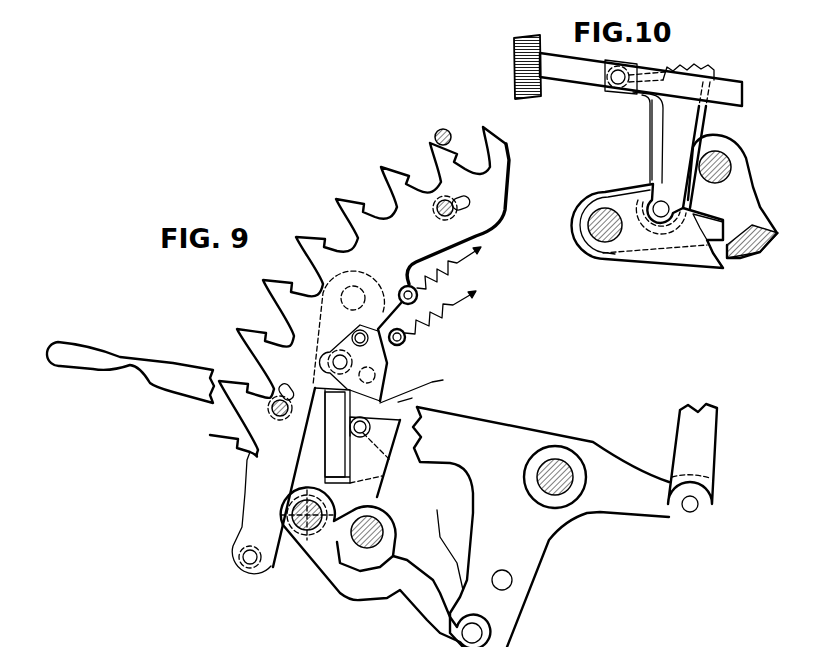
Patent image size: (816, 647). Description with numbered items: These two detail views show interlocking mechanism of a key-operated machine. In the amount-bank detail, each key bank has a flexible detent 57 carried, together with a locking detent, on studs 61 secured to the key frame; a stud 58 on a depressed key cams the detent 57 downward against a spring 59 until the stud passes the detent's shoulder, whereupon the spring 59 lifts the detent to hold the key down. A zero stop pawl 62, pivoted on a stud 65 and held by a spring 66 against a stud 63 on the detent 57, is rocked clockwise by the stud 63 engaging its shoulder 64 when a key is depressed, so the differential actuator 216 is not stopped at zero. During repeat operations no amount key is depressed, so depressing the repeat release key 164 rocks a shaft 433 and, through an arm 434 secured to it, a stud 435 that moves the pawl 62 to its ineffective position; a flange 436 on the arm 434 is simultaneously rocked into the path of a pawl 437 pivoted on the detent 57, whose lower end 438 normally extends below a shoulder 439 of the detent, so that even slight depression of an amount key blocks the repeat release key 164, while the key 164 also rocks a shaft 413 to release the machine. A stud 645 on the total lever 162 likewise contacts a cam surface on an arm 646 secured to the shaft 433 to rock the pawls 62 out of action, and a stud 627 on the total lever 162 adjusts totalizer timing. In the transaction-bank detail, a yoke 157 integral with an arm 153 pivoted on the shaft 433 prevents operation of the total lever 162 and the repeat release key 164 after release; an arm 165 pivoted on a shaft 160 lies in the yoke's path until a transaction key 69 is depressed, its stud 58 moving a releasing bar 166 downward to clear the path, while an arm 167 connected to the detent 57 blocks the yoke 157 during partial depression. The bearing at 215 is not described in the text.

In FIG. 9, the flexible detent 57 is at (352, 207).
In FIG. 10, the flexible detent 57 is at (657, 120).
In FIG. 10, the stud 58 is at (606, 93).
In FIG. 9, the spring 59 is at (458, 265).
In FIG. 9, the stud 61 is at (434, 214).
In FIG. 9, the zero stop pawl 62 is at (330, 447).
In FIG. 9, the stud 63 is at (377, 378).
In FIG. 9, the shoulder 64 is at (347, 396).
In FIG. 9, the stud 65 is at (355, 286).
In FIG. 9, the spring 66 is at (454, 307).
In FIG. 10, the transaction key 69 is at (520, 60).
In FIG. 10, the arm 153 is at (747, 216).
In FIG. 10, the yoke 157 is at (731, 256).
In FIG. 10, the shaft 160 is at (607, 210).
In FIG. 9, the total lever 162 is at (466, 421).
In FIG. 9, the repeat release key 164 is at (146, 638).
In FIG. 10, the arm 165 is at (710, 262).
In FIG. 10, the releasing bar 166 is at (652, 140).
In FIG. 10, the arm 167 is at (700, 216).
In FIG. 9, the hub 215 is at (550, 471).
In FIG. 9, the actuator 216 is at (433, 543).
In FIG. 9, the shaft 413 is at (384, 525).
In FIG. 9, the shaft 433 is at (300, 503).
In FIG. 10, the shaft 433 is at (716, 165).
In FIG. 9, the arm 434 is at (387, 440).
In FIG. 9, the stud 435 is at (386, 455).
In FIG. 9, the flange 436 is at (412, 398).
In FIG. 9, the pawl 437 is at (390, 369).
In FIG. 9, the lower end 438 is at (424, 384).
In FIG. 9, the shoulder 439 is at (351, 426).
In FIG. 9, the stud 627 is at (522, 553).
In FIG. 9, the stud 645 is at (473, 630).
In FIG. 9, the arm 646 is at (329, 573).